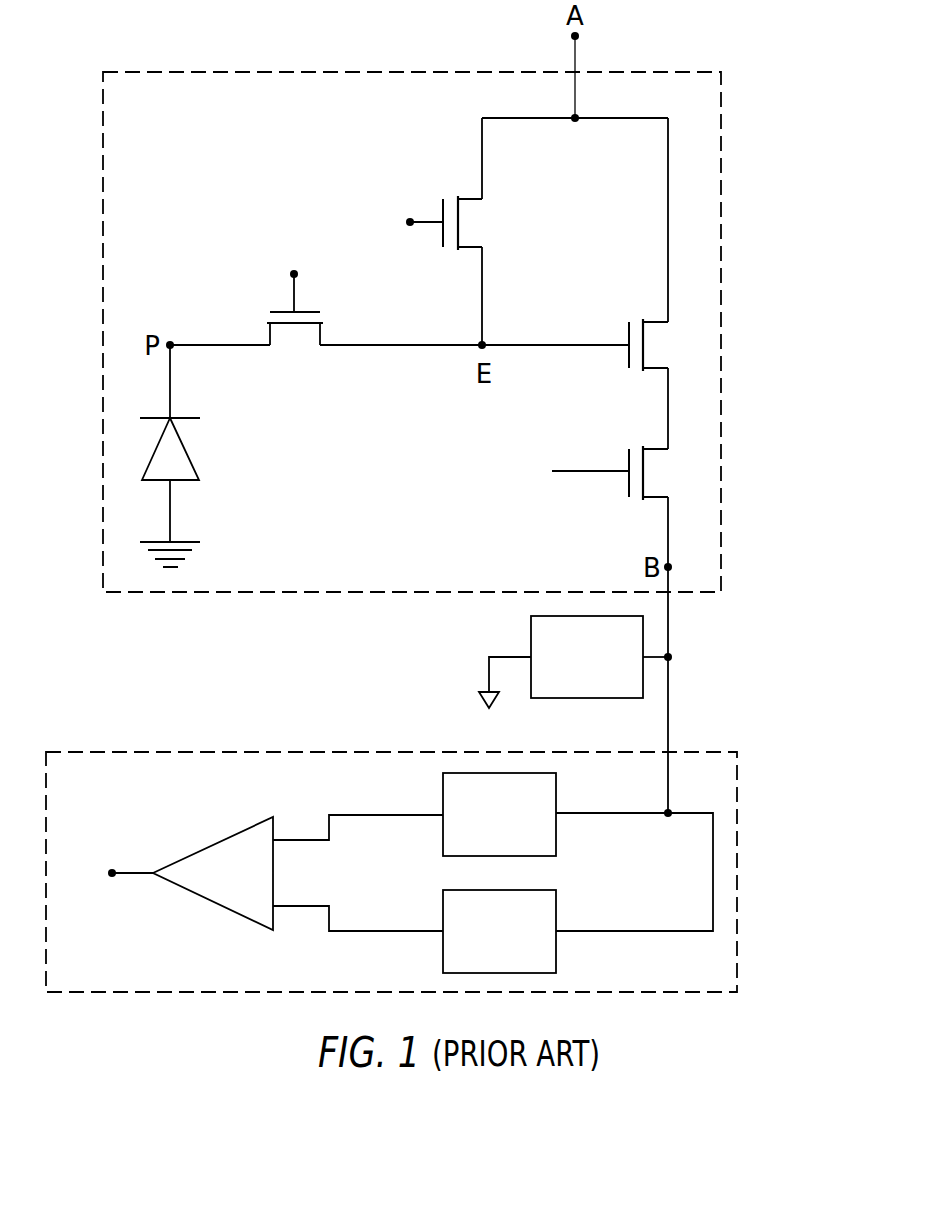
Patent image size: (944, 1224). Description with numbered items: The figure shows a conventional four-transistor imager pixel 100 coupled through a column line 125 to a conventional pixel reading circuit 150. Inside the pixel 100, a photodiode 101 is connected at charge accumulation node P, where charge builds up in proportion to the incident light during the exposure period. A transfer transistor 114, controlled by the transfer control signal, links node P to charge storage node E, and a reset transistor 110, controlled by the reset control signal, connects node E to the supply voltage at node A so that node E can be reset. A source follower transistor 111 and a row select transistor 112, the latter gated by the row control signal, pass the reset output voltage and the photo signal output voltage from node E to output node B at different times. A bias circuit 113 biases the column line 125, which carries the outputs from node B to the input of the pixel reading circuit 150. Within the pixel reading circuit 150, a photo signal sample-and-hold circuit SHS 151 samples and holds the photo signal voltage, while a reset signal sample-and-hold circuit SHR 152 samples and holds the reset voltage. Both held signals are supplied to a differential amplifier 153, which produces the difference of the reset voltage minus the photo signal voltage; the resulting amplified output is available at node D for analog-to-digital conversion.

The imager pixel 100 is at (721, 125).
The photodiode 101 is at (170, 461).
The reset transistor 110 is at (471, 197).
The source follower transistor 111 is at (654, 320).
The row select transistor 112 is at (654, 447).
The bias circuit 113 is at (570, 698).
The transfer transistor 114 is at (306, 338).
The column line 125 is at (676, 675).
The pixel reading circuit 150 is at (738, 785).
The photo signal sample-and-hold circuit SHS 151 is at (482, 851).
The reset signal sample-and-hold circuit SHR 152 is at (482, 968).
The differential amplifier 153 is at (197, 887).